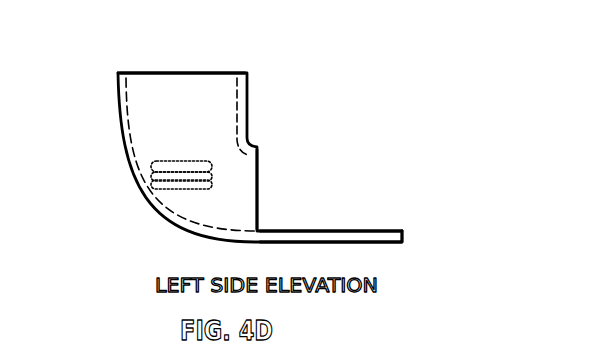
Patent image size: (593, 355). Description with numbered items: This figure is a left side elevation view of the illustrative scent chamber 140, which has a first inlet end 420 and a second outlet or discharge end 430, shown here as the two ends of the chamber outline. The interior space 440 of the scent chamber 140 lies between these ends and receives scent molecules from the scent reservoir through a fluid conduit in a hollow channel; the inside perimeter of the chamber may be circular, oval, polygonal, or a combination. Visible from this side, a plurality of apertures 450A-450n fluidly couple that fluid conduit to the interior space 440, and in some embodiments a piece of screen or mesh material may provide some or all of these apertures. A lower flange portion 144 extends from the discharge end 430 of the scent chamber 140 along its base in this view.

The scent chamber 140 is at (259, 41).
The first (inlet) end 420 is at (182, 72).
The interior space 440 is at (200, 132).
The second (outlet or discharge) end 430 is at (258, 175).
The base flange 144 is at (403, 236).
The aperture 450A is at (121, 201).
The aperture 450n is at (157, 188).